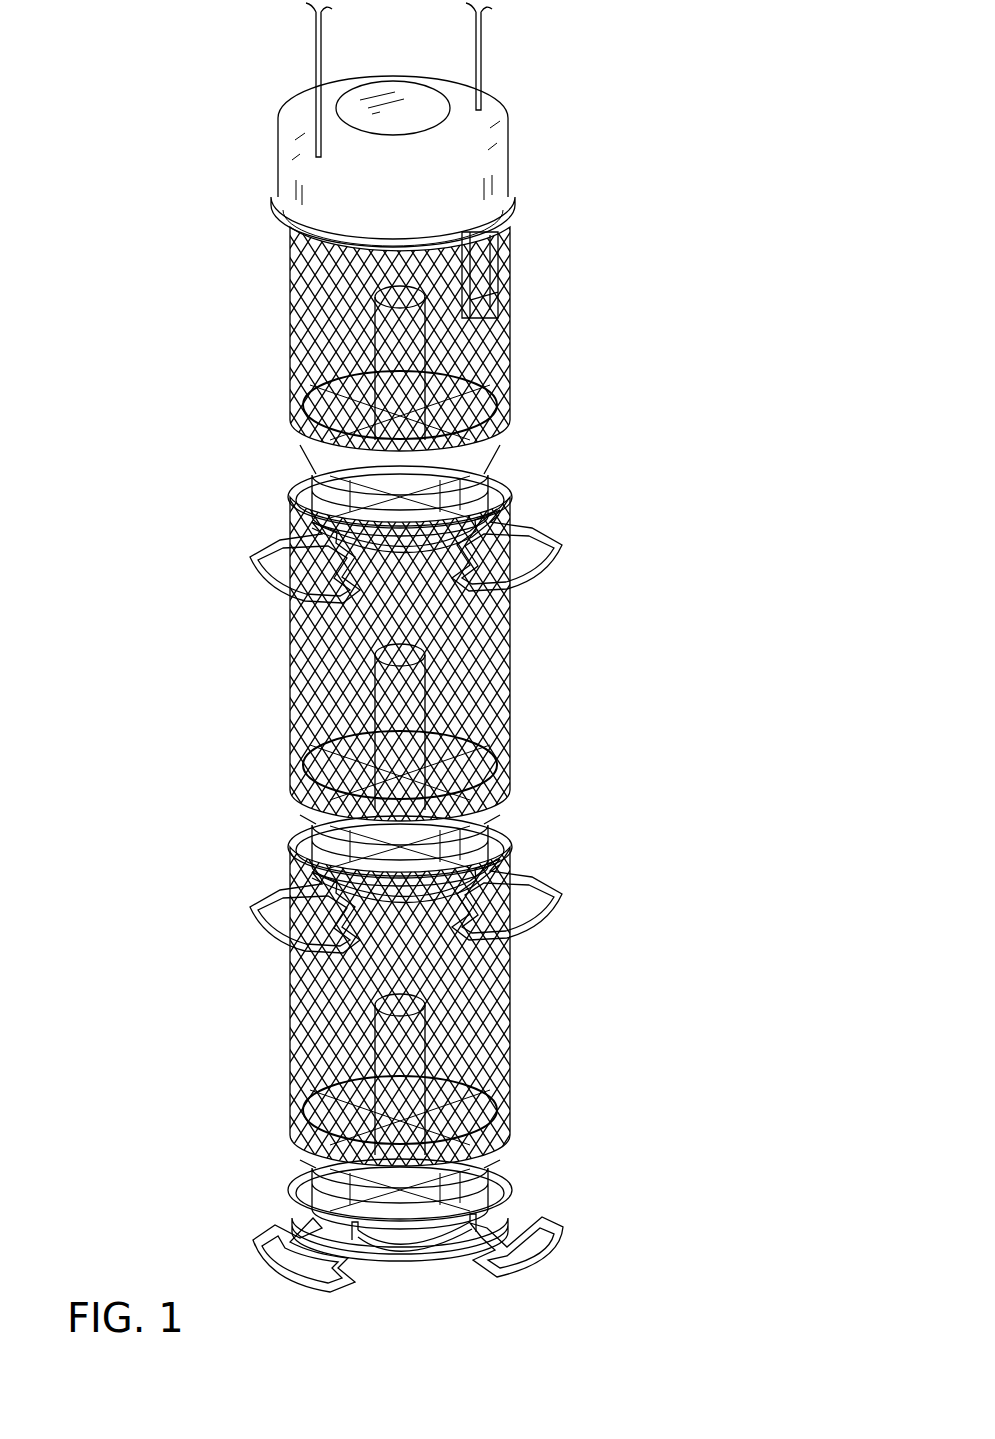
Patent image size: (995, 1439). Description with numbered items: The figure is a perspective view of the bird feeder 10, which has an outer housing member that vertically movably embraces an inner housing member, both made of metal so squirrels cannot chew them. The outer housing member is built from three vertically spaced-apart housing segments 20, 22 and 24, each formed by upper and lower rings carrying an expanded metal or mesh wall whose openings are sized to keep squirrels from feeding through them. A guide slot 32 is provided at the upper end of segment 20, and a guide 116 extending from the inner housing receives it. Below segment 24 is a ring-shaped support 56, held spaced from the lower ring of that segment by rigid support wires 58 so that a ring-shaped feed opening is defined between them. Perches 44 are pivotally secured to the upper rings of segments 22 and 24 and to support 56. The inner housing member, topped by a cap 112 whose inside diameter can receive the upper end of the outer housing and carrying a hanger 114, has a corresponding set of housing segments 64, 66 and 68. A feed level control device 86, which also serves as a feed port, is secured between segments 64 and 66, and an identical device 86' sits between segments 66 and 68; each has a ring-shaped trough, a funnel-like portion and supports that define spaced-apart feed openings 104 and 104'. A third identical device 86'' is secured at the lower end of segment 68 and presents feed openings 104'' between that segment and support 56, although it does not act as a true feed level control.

The bird feeder 10 is at (610, 322).
The hanger 114 is at (486, 56).
The cap 112 is at (475, 152).
The guide 116 is at (510, 240).
The guide slot 32 is at (505, 281).
The housing segment 20 is at (419, 350).
The housing segment 64 is at (326, 322).
The housing segment 22 is at (416, 660).
The housing segment 66 is at (326, 657).
The housing segment 24 is at (415, 1007).
The housing segment 68 is at (330, 1032).
The feed level control device 86 is at (336, 499).
The feed openings 104 is at (492, 493).
The feed level control device 86' is at (334, 851).
The feed openings 104' is at (496, 845).
The feed device 86'' is at (332, 1194).
The feed openings 104'' is at (503, 1170).
The perches 44 is at (250, 558).
The ring-shaped support 56 is at (512, 1192).
The rigid support wires 58 is at (395, 1225).